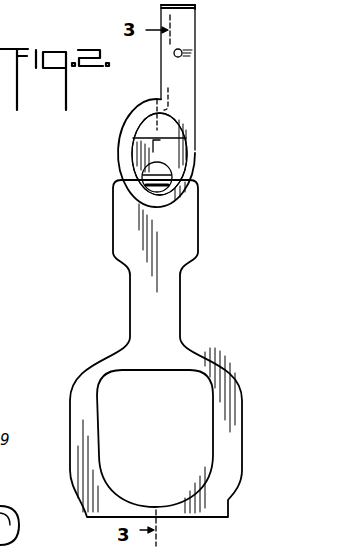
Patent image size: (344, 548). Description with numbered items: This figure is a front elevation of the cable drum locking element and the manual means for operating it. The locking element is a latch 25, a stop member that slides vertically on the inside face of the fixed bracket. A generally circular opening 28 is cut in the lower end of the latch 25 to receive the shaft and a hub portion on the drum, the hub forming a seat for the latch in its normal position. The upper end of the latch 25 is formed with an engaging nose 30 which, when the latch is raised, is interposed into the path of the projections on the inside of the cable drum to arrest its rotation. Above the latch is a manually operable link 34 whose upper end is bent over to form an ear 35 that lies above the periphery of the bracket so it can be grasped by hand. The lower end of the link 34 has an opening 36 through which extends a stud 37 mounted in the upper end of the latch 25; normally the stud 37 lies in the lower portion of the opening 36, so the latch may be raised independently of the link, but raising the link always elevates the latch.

The latch 25 is at (168, 297).
The circular opening 28 is at (196, 385).
The engaging nose 30 is at (150, 150).
The manually operable link 34 is at (190, 82).
The ear 35 is at (194, 7).
The opening 36 is at (186, 120).
The stud 37 is at (172, 176).